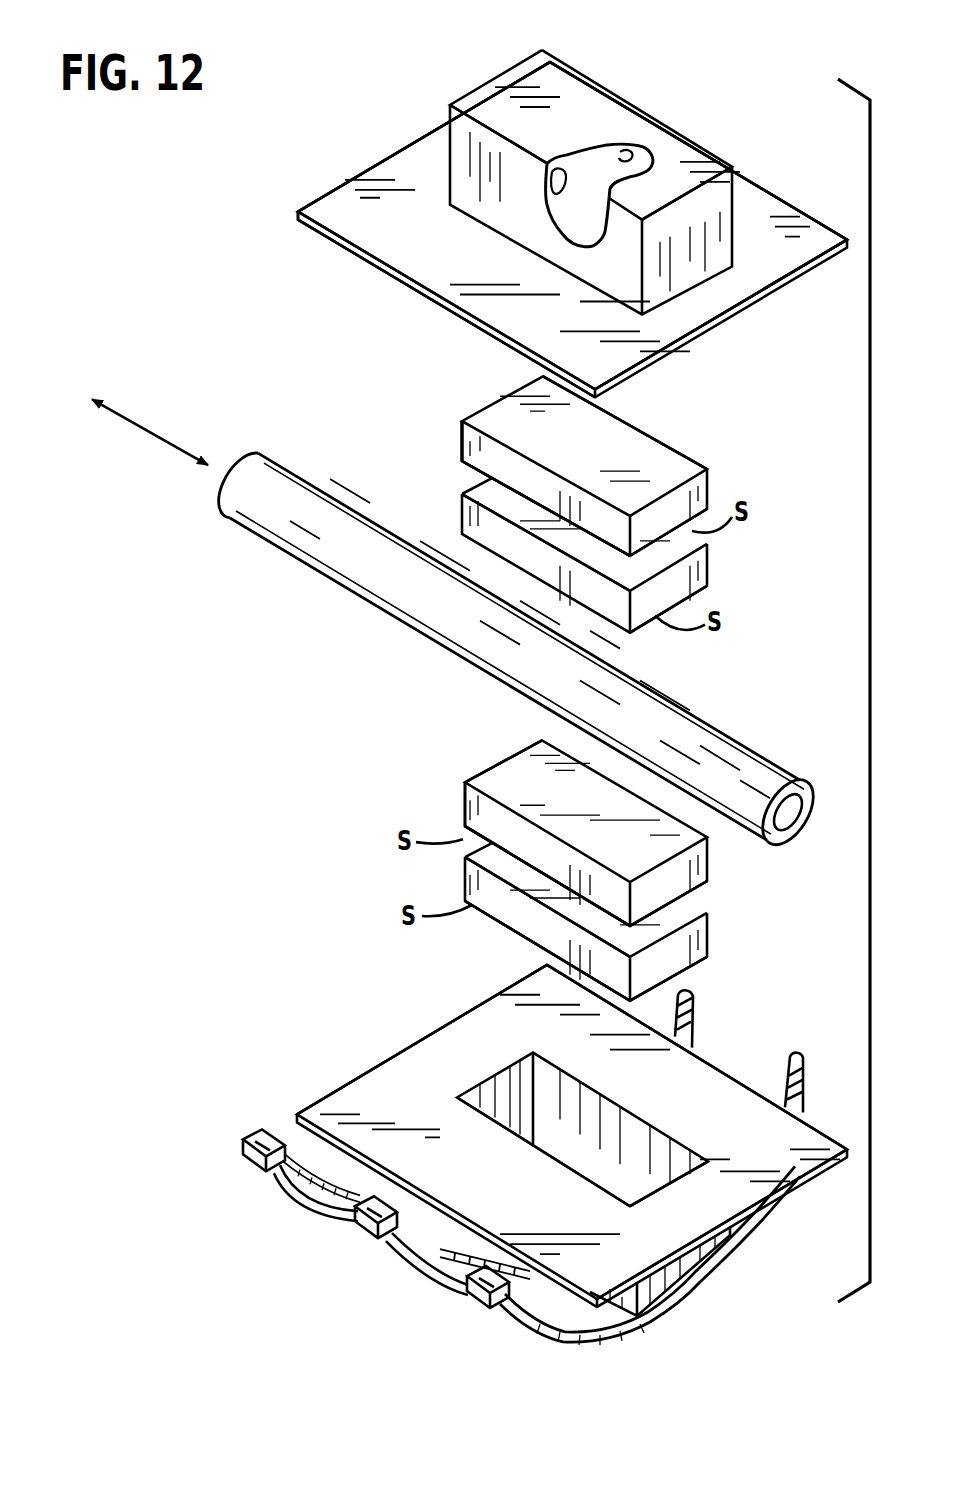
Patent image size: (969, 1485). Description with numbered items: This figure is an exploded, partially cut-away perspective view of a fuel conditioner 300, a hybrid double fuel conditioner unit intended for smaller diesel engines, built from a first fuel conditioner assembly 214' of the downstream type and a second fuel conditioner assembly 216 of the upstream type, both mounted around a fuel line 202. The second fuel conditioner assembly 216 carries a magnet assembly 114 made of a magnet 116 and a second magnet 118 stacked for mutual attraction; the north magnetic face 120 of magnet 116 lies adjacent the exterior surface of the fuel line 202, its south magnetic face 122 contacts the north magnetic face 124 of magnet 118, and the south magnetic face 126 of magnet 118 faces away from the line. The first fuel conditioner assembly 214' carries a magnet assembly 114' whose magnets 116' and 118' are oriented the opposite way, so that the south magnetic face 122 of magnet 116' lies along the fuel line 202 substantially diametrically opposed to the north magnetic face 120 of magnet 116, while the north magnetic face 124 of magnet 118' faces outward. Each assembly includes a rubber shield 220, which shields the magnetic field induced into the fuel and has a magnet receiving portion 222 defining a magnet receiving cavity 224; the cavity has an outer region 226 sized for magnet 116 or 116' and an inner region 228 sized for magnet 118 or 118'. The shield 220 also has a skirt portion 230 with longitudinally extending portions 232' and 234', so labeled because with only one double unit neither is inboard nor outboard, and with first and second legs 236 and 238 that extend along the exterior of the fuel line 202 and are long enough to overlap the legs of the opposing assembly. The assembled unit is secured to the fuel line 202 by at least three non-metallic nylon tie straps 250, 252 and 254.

The fuel conditioner 300 is at (320, 50).
The first fuel conditioner assembly 214' is at (484, 225).
The second fuel conditioner assembly 216 is at (187, 700).
The fuel line 202 is at (272, 517).
The magnet assembly 114 is at (506, 854).
The magnet assembly 114' is at (518, 468).
The magnet 116 is at (619, 833).
The magnet 116' is at (634, 555).
The second magnet 118 is at (619, 922).
The second magnet 118' is at (633, 466).
The north magnetic face 120 is at (483, 486).
The south magnetic face 122 is at (647, 617).
The north magnetic face 124 is at (630, 460).
The south magnetic face 126 is at (472, 470).
The rubber shield 220 is at (403, 160).
The magnet receiving portion 222 is at (593, 102).
The magnet receiving cavity 224 is at (605, 158).
The outer region 226 is at (606, 195).
The inner region 228 is at (548, 212).
The skirt portion 230 is at (330, 205).
The longitudinally extending portion 232' is at (423, 586).
The longitudinally extending portion 234' is at (721, 769).
The first leg 236 is at (418, 247).
The second leg 238 is at (757, 205).
The tie strap 250 is at (292, 1192).
The tie strap 252 is at (405, 1262).
The tie strap 254 is at (565, 1340).